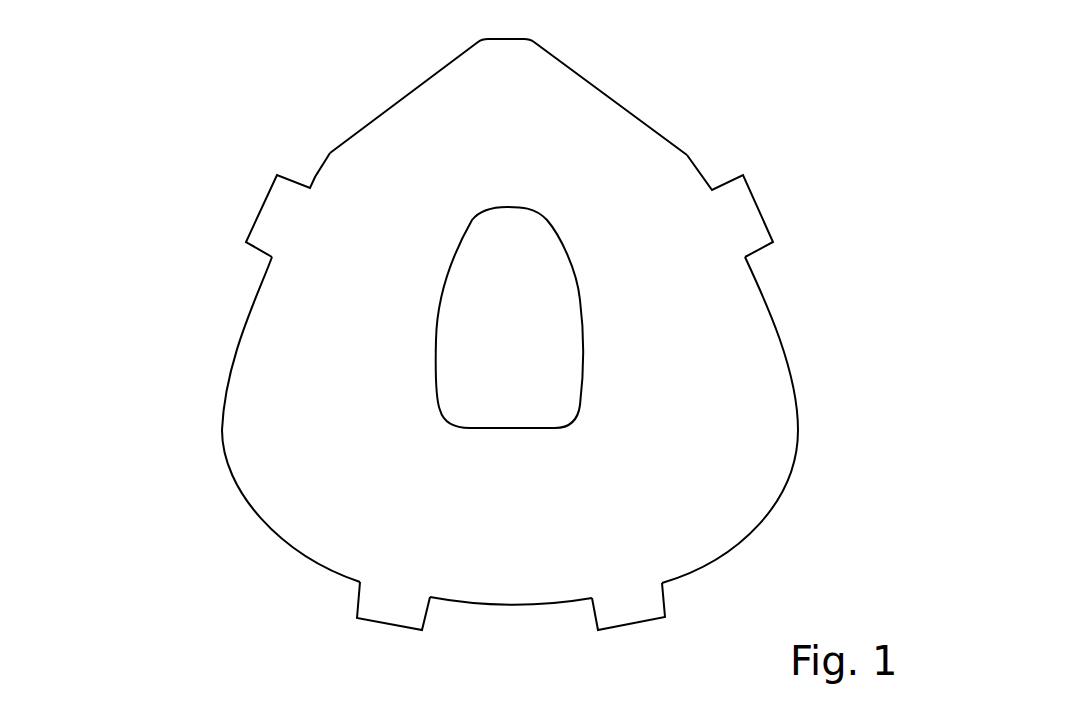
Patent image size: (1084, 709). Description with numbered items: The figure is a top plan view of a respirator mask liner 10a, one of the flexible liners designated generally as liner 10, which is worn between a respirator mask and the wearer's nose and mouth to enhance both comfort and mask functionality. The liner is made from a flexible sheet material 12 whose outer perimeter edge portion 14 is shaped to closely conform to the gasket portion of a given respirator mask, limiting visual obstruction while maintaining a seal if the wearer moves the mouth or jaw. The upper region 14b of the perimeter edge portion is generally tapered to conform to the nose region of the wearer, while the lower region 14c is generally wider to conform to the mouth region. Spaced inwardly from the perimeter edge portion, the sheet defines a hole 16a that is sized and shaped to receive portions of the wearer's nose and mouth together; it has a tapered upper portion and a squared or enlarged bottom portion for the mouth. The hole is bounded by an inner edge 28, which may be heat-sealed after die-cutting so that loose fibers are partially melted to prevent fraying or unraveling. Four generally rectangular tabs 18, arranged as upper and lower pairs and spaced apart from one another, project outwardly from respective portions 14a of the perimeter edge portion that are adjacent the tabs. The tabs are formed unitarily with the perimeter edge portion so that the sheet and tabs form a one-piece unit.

The mask liner 10 is at (776, 70).
The mask liner 10a is at (821, 165).
The flexible sheet material 12 is at (768, 358).
The outer perimeter edge portion 14 is at (365, 117).
The portions of the perimeter edge portion 14a is at (312, 174).
The upper region 14b is at (592, 57).
The lower region 14c is at (170, 412).
The hole 16a is at (562, 304).
The tabs 18 is at (267, 215).
The inner edge 28 is at (507, 211).